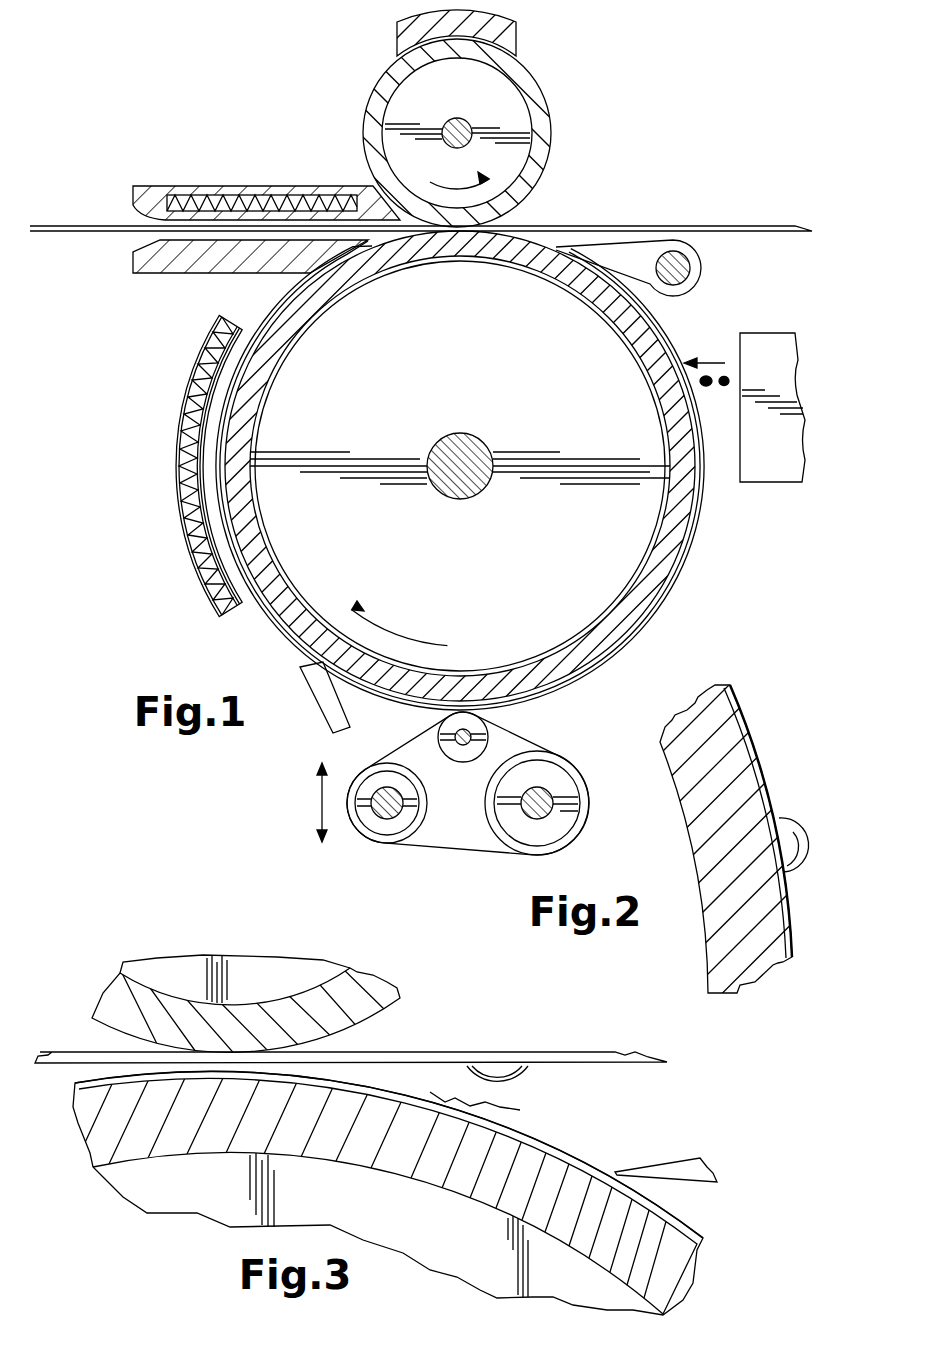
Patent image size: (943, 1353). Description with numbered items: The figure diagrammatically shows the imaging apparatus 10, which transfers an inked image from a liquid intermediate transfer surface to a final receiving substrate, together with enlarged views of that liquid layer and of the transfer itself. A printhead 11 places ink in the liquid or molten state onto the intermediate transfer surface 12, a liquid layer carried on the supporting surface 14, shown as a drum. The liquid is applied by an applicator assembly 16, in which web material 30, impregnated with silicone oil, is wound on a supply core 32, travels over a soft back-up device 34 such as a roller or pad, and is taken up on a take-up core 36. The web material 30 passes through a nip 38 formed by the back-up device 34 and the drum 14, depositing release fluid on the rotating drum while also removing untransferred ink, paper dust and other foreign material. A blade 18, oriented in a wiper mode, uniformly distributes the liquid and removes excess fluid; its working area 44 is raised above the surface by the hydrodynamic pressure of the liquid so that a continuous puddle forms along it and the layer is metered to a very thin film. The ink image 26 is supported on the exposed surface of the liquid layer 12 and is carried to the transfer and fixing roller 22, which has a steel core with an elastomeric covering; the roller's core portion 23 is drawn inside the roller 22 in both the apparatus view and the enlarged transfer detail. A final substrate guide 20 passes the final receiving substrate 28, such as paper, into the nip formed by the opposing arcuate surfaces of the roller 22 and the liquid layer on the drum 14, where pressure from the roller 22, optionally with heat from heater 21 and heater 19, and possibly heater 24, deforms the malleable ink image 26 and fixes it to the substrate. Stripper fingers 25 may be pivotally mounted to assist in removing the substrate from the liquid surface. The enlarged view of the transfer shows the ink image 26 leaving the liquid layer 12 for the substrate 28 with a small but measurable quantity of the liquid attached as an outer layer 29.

In FIG. 1, the imaging apparatus 10 is at (674, 149).
In FIG. 1, the printhead 11 is at (752, 333).
In FIG. 2, the intermediate transfer surface 12 is at (752, 742).
In FIG. 3, the intermediate transfer surface 12 is at (670, 1205).
In FIG. 1, the supporting surface 14 is at (655, 562).
In FIG. 2, the supporting surface 14 is at (740, 990).
In FIG. 3, the supporting surface 14 is at (430, 1197).
In FIG. 1, the applicator assembly 16 is at (460, 826).
In FIG. 1, the blade 18 is at (315, 710).
In FIG. 1, the heater 19 is at (180, 425).
In FIG. 1, the final substrate guide 20 is at (190, 275).
In FIG. 1, the heater 21 is at (256, 185).
In FIG. 1, the transfer and fixing roller 22 is at (552, 158).
In FIG. 3, the transfer and fixing roller 22 is at (279, 987).
In FIG. 1, the roller core 23 is at (418, 100).
In FIG. 3, the roller core 23 is at (243, 970).
In FIG. 1, the heater 24 is at (517, 44).
In FIG. 1, the stripper fingers 25 is at (697, 292).
In FIG. 3, the stripper fingers 25 is at (658, 1163).
In FIG. 2, the ink image 26 is at (800, 830).
In FIG. 3, the ink image 26 is at (512, 1082).
In FIG. 1, the final receiving substrate 28 is at (650, 226).
In FIG. 3, the final receiving substrate 28 is at (537, 1052).
In FIG. 3, the outer layer 29 is at (527, 1073).
In FIG. 1, the web material 30 is at (542, 750).
In FIG. 1, the supply core 32 is at (395, 845).
In FIG. 1, the back-up device 34 is at (455, 762).
In FIG. 1, the take-up core 36 is at (590, 800).
In FIG. 1, the nip 38 is at (500, 716).
In FIG. 1, the working area 44 is at (345, 682).